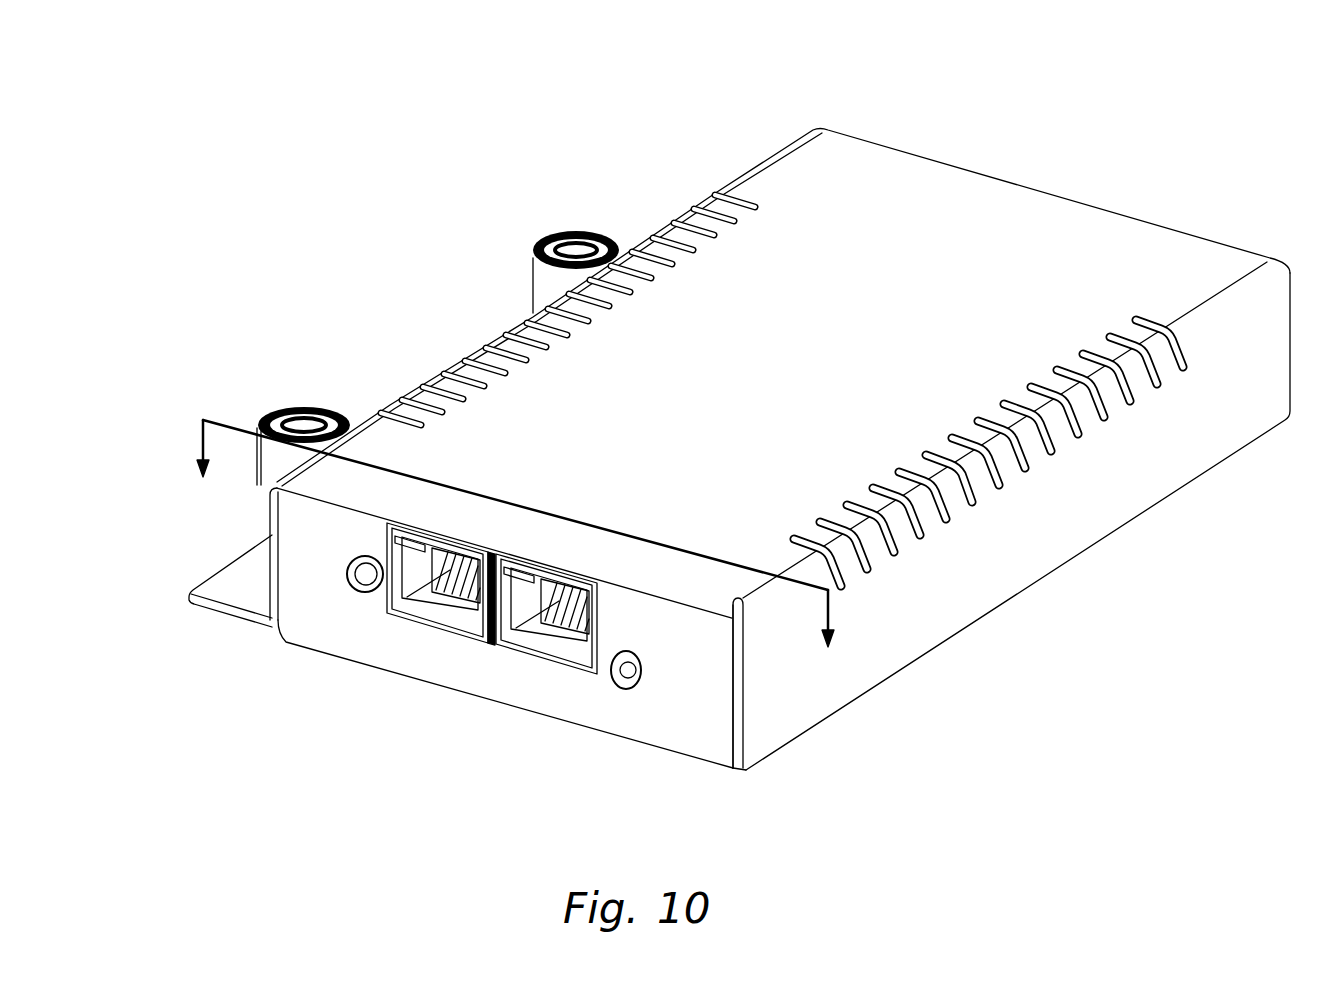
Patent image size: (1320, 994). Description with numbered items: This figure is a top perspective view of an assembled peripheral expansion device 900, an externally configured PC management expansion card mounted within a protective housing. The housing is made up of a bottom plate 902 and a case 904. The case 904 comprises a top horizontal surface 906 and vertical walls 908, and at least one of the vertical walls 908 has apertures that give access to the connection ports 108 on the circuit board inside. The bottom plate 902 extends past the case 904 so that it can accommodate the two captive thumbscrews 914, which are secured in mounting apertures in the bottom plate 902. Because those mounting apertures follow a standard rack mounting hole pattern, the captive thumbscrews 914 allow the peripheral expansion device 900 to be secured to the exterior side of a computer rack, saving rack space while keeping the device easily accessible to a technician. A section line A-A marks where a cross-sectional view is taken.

The peripheral expansion device 900 is at (727, 432).
The bottom plate 902 is at (231, 586).
The case 904 is at (303, 648).
The top horizontal surface 906 is at (677, 451).
The vertical walls 908 is at (773, 713).
The captive thumbscrews 914 is at (538, 253).
The connection ports 108 is at (618, 673).